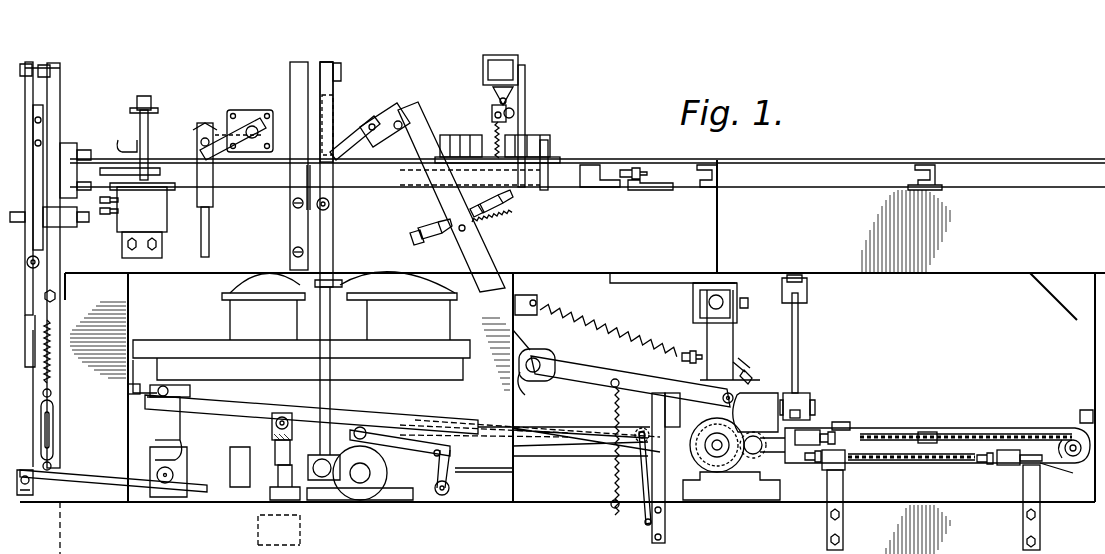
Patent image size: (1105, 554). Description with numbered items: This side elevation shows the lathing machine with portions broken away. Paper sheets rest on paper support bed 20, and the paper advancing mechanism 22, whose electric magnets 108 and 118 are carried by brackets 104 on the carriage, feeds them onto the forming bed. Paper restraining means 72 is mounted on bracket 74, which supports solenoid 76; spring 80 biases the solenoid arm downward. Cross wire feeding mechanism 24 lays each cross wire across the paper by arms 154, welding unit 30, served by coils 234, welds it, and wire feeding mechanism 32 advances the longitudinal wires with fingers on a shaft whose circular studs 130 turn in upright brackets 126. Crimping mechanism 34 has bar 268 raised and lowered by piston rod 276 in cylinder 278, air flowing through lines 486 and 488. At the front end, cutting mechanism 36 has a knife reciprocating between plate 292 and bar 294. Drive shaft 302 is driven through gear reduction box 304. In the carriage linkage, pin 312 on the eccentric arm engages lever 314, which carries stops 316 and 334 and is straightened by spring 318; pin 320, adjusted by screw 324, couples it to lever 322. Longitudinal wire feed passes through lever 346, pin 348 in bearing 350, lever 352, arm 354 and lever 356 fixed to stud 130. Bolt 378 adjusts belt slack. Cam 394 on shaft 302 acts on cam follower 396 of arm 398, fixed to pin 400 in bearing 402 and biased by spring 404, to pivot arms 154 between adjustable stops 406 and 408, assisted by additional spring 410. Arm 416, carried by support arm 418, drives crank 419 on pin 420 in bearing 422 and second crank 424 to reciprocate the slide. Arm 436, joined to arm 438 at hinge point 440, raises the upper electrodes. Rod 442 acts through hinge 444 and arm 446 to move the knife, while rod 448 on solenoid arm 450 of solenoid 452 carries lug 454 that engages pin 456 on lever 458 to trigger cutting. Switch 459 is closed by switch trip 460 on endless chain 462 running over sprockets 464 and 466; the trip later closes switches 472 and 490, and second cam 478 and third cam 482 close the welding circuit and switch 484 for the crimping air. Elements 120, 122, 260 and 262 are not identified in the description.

The paper support bed 20 is at (873, 157).
The paper advancing mechanism 22 is at (467, 113).
The cross wire feeding mechanism 24 is at (398, 112).
The welding unit 30 is at (353, 105).
The wire feeding mechanism 32 is at (230, 168).
The crimping mechanism 34 is at (135, 127).
The cutting mechanism 36 is at (62, 252).
The paper restraining means 72 is at (536, 110).
The bracket 74 is at (526, 90).
The solenoid 76 is at (505, 66).
The spring 80 is at (497, 118).
The bracket 104 is at (437, 156).
The electric magnets 108 is at (462, 134).
The magnet 118 is at (538, 136).
The vertical guide bar 120 is at (548, 147).
The bracket 122 is at (552, 163).
The upright bracket 126 is at (237, 165).
The circular stud 130 is at (254, 138).
The arms 154 is at (482, 252).
The coil 234 is at (402, 316).
The left column bar 260 is at (290, 72).
The right column bar top 262 is at (340, 90).
The bar 268 is at (118, 140).
The piston rod 276 is at (148, 135).
The cylinder 278 is at (168, 222).
The plate 292 is at (25, 80).
The bar 294 is at (66, 90).
The drive shaft 302 is at (722, 470).
The gear reduction box 304 is at (788, 393).
The pin 312 is at (682, 361).
The lever 314 is at (710, 335).
The stop 316 is at (730, 360).
The spring 318 is at (598, 325).
The pin 320 is at (737, 297).
The lever 322 is at (693, 285).
The screw 324 is at (748, 305).
The second stop 334 is at (748, 372).
The lever 346 is at (272, 428).
The pin 348 is at (242, 490).
The bearing 350 is at (230, 462).
The lever 352 is at (207, 492).
The arm 354 is at (210, 241).
The lever 356 is at (240, 125).
The bolt 378 is at (799, 315).
The cam 394 is at (742, 410).
The cam follower 396 is at (722, 394).
The arm 398 is at (572, 365).
The pin 400 is at (545, 381).
The bearing 402 is at (530, 385).
The spring 404 is at (608, 482).
The adjustable stop 406 is at (421, 226).
The adjustable stop 408 is at (476, 204).
The additional spring 410 is at (514, 212).
The arm 416 is at (532, 452).
The support arm 418 is at (637, 493).
The crank 419 is at (462, 470).
The pin 420 is at (447, 495).
The bearing 422 is at (437, 490).
The second crank 424 is at (407, 478).
The arm 436 is at (332, 169).
The arm 438 is at (342, 174).
The hinge point 440 is at (329, 204).
The rod 442 is at (55, 411).
The hinge 444 is at (36, 268).
The arm 446 is at (74, 148).
The rod 448 is at (252, 403).
The solenoid arm 450 is at (290, 453).
The solenoid 452 is at (298, 490).
The lug 454 is at (183, 393).
The pin 456 is at (128, 390).
The lever 458 is at (147, 432).
The switch 459 is at (1005, 465).
The switch trip 460 is at (928, 431).
The endless chain 462 is at (978, 433).
The sprocket 464 is at (1068, 440).
The sprocket 466 is at (760, 494).
The switch 472 is at (838, 468).
The second cam 478 is at (733, 470).
The third cam 482 is at (710, 470).
The switch 484 is at (670, 395).
The line 486 is at (103, 214).
The line 488 is at (116, 202).
The switch 490 is at (805, 430).